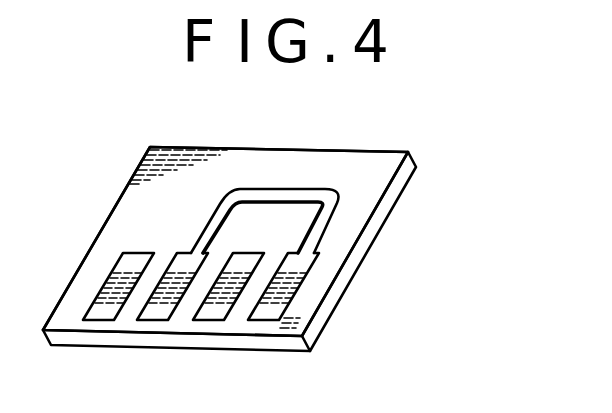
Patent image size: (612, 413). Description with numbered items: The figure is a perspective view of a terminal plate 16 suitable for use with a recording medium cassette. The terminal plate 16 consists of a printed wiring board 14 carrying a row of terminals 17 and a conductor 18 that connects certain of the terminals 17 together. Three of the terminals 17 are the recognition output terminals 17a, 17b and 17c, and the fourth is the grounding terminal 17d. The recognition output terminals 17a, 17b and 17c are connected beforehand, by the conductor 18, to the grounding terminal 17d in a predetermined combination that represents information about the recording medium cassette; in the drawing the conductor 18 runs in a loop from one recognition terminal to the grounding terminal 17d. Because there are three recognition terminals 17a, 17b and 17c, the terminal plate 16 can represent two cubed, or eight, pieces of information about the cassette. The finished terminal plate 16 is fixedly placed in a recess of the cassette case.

The printed wiring board 14 is at (357, 217).
The terminal plate 16 is at (424, 174).
The terminals 17 is at (234, 331).
The recognition output terminal 17a is at (103, 310).
The recognition output terminal 17b is at (162, 310).
The recognition output terminal 17c is at (215, 310).
The grounding terminal 17d is at (270, 310).
The conductor 18 is at (236, 174).